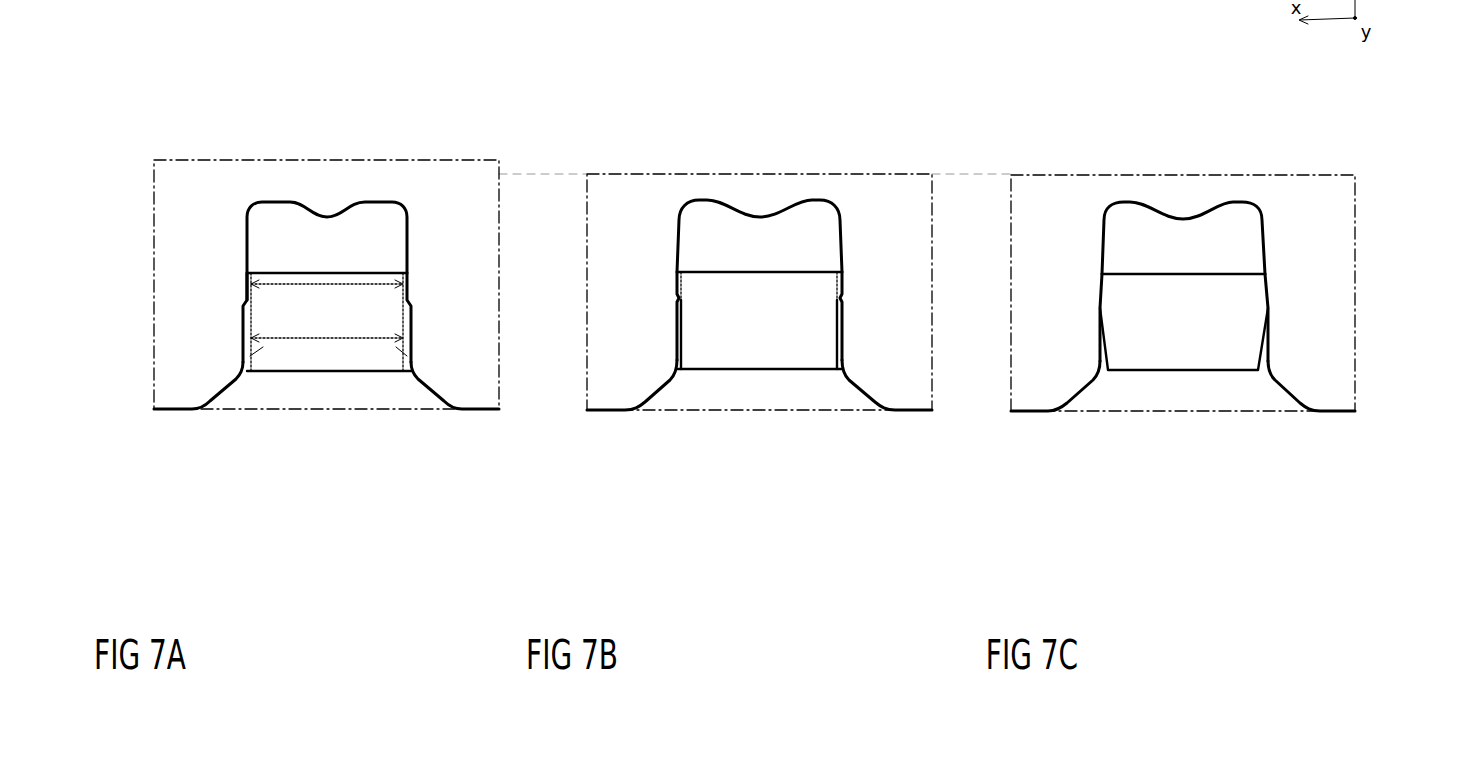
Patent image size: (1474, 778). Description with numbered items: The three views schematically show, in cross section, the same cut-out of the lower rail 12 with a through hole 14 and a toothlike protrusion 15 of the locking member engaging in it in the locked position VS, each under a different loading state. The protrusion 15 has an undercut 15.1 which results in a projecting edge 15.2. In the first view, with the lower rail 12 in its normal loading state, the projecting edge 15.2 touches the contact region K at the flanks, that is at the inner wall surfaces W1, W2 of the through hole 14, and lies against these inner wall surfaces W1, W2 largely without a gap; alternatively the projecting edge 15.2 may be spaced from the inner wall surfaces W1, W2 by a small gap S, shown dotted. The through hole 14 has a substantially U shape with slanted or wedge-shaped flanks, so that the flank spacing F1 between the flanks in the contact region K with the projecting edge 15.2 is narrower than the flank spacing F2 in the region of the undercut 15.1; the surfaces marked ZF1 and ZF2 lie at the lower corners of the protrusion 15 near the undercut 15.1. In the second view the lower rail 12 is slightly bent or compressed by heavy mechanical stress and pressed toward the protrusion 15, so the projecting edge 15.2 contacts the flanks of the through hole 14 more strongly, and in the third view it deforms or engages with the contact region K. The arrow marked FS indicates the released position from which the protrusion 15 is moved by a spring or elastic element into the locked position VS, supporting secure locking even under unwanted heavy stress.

In FIG. 7A, the lower rail 12 is at (468, 177).
In FIG. 7B, the lower rail 12 is at (898, 174).
In FIG. 7C, the lower rail 12 is at (1327, 175).
In FIG. 7A, the through hole 14 is at (378, 220).
In FIG. 7B, the through hole 14 is at (808, 218).
In FIG. 7C, the through hole 14 is at (1233, 218).
In FIG. 7A, the toothlike protrusion 15 is at (337, 362).
In FIG. 7B, the toothlike protrusion 15 is at (767, 360).
In FIG. 7C, the toothlike protrusion 15 is at (1227, 358).
In FIG. 7A, the undercut 15.1 is at (250, 373).
In FIG. 7B, the undercut 15.1 is at (678, 372).
In FIG. 7C, the undercut 15.1 is at (1103, 371).
In FIG. 7A, the projecting edge 15.2 is at (243, 303).
In FIG. 7B, the projecting edge 15.2 is at (677, 290).
In FIG. 7C, the projecting edge 15.2 is at (1097, 308).
In FIG. 7A, the locked position VS is at (205, 140).
In FIG. 7A, the inner wall surface W1 is at (248, 237).
In FIG. 7A, the inner wall surface W2 is at (395, 238).
In FIG. 7A, the gap S is at (248, 300).
In FIG. 7A, the contact region K is at (332, 292).
In FIG. 7B, the contact region K is at (865, 289).
In FIG. 7C, the contact region K is at (1185, 293).
In FIG. 7A, the flank spacing F1 is at (322, 287).
In FIG. 7A, the flank spacing F2 is at (323, 340).
In FIG. 7A, the first intermediate surface ZF1 is at (262, 373).
In FIG. 7A, the second intermediate surface ZF2 is at (390, 373).
In FIG. 7B, the released position FS is at (755, 477).
In FIG. 7C, the released position FS is at (1177, 477).